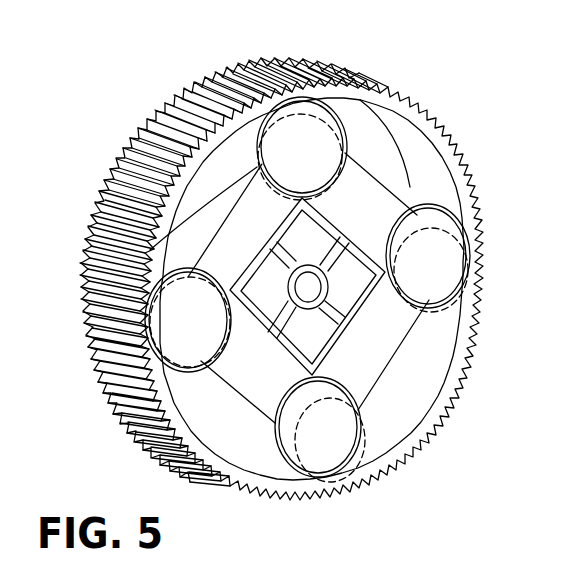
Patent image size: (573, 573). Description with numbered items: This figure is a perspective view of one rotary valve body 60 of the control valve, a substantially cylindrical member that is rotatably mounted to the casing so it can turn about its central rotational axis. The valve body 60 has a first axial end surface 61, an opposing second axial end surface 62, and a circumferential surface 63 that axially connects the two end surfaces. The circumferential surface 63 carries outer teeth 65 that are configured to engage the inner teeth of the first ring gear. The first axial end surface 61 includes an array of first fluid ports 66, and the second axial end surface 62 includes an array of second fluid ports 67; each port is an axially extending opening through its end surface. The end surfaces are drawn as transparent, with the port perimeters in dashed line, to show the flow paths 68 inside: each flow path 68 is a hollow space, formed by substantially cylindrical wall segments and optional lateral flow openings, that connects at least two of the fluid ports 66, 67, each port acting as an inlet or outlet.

The valve body 60 is at (295, 274).
The first axial end surface 61 is at (281, 253).
The second axial end surface 62 is at (450, 158).
The circumferential surface 63 is at (372, 80).
The outer teeth 65 is at (307, 66).
The first fluid ports 66 is at (470, 257).
The second fluid ports 67 is at (350, 142).
The flow path 68 is at (276, 161).